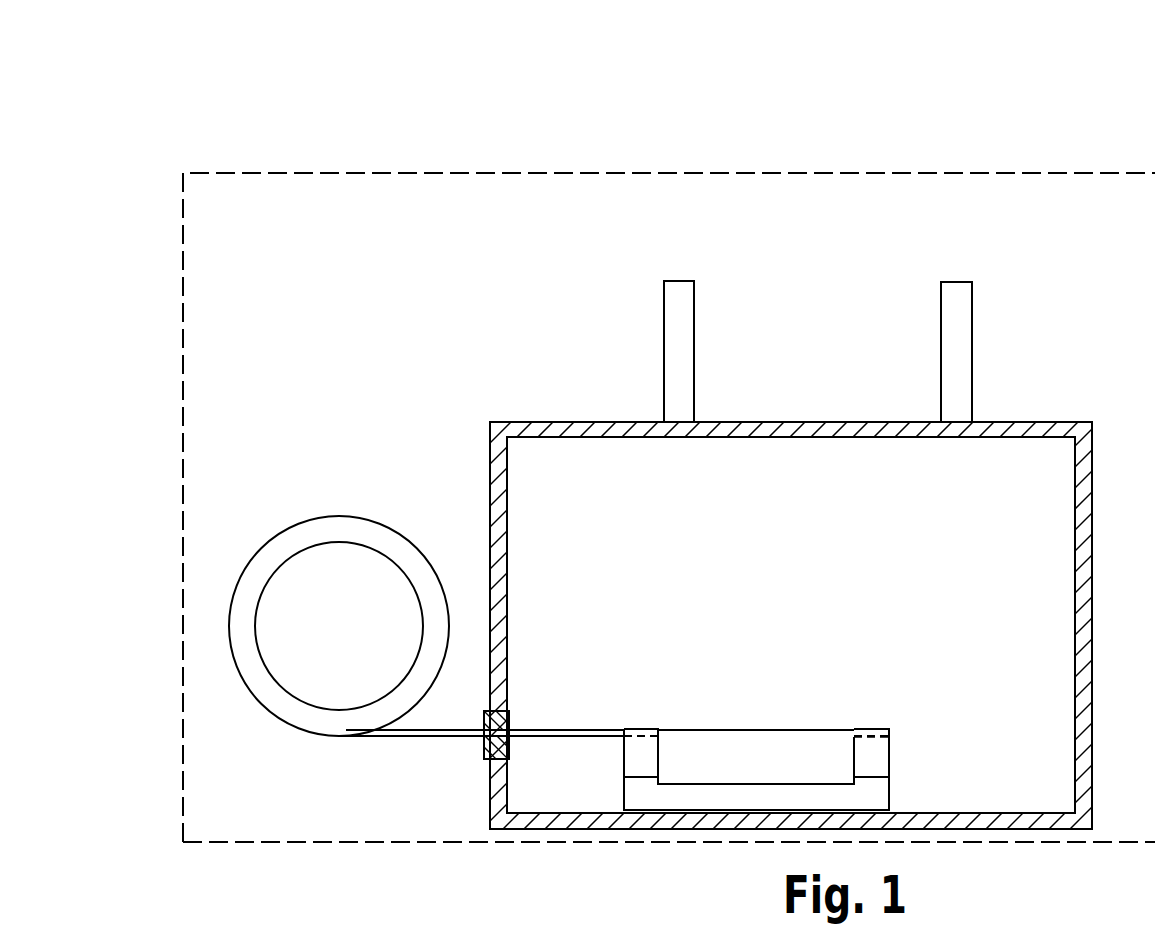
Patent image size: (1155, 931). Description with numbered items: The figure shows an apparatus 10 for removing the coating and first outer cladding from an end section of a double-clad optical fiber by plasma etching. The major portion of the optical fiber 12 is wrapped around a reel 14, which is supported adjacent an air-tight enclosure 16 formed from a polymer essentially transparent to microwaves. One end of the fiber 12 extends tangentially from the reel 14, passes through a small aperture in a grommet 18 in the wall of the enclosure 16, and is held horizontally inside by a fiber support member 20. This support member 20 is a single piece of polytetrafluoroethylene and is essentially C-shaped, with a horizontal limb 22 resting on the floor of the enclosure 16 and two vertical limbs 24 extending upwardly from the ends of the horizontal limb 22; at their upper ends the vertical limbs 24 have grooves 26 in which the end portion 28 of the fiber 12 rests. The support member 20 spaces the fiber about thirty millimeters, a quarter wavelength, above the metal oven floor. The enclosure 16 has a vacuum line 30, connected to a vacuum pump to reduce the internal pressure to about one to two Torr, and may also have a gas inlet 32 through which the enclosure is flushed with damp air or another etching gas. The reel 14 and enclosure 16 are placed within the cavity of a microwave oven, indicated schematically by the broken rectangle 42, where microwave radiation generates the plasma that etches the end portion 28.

The apparatus 10 is at (704, 112).
The optical fiber 12 is at (462, 737).
The reel 14 is at (315, 718).
The enclosure 16 is at (490, 421).
The grommet 18 is at (487, 755).
The fiber support member 20 is at (664, 694).
The horizontal limb 22 is at (787, 808).
The vertical limbs 24 is at (756, 753).
The grooves 26 is at (863, 737).
The end portion 28 is at (737, 730).
The vacuum line 30 is at (677, 352).
The gas inlet 32 is at (955, 348).
The microwave oven cavity 42 is at (837, 172).